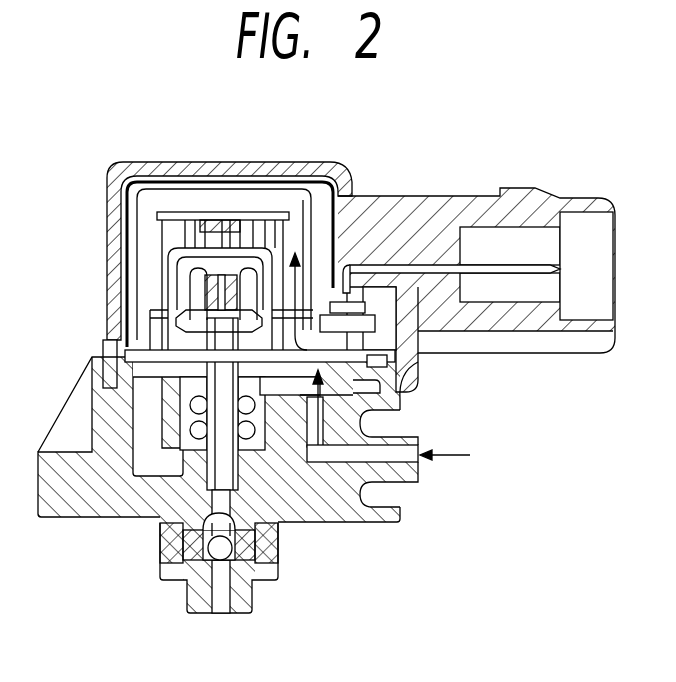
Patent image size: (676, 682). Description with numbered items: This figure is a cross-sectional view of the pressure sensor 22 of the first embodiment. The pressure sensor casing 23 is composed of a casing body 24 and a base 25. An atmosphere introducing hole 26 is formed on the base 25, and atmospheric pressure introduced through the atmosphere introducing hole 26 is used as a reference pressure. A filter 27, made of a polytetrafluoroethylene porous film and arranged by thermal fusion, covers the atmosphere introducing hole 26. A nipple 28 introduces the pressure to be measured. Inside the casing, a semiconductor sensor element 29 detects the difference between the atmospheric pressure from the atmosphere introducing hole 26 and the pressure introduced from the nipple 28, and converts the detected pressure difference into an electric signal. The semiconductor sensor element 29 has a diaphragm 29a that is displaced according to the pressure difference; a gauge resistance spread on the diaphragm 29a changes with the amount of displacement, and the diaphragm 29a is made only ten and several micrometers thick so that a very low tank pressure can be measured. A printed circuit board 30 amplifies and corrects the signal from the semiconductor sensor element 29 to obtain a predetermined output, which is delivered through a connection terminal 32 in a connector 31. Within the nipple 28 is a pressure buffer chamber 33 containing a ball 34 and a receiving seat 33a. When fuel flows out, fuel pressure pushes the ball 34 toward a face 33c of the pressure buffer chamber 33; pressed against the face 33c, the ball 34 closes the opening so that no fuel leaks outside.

The pressure sensor 22 is at (286, 160).
The pressure sensor casing 23 is at (115, 166).
The casing body 24 is at (384, 205).
The base 25 is at (54, 508).
The atmosphere introducing hole 26 is at (394, 450).
The filter 27 is at (415, 393).
The nipple 28 is at (240, 612).
The semiconductor sensor element 29 is at (190, 247).
The diaphragm 29a is at (218, 262).
The printed circuit board 30 is at (178, 212).
The connector 31 is at (565, 237).
The connection terminal 32 is at (546, 266).
The pressure buffer chamber 33 is at (278, 534).
The receiving seat 33a is at (278, 565).
The face 33c is at (212, 550).
The ball 34 is at (162, 580).